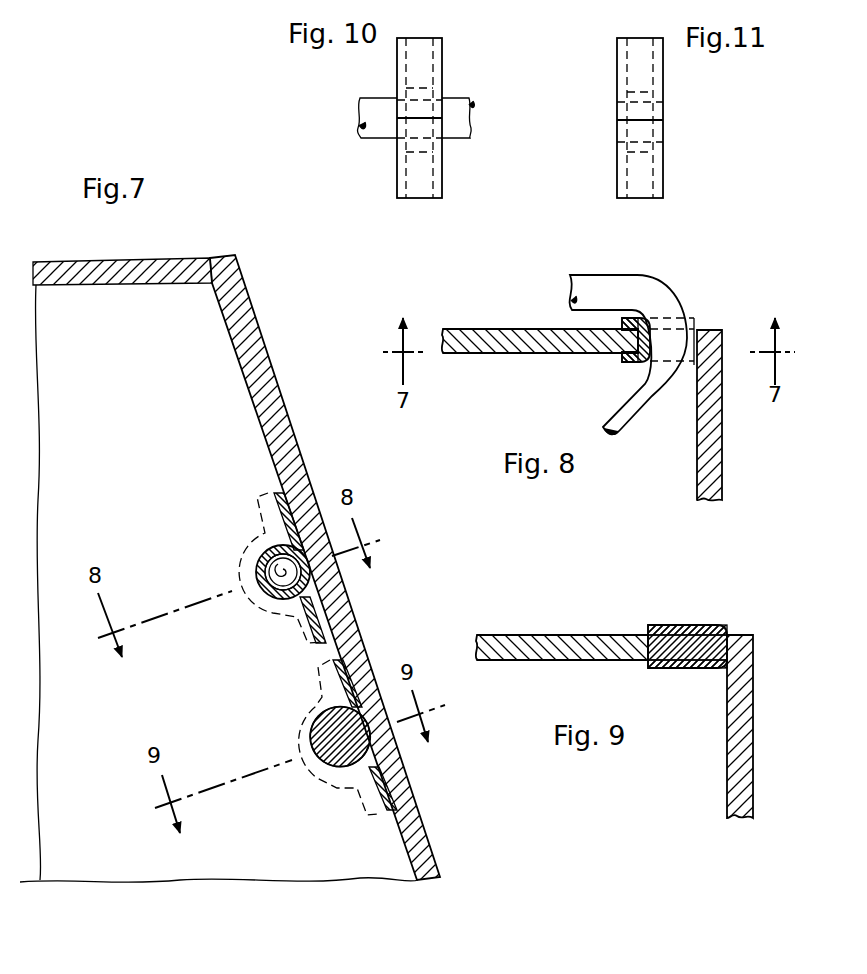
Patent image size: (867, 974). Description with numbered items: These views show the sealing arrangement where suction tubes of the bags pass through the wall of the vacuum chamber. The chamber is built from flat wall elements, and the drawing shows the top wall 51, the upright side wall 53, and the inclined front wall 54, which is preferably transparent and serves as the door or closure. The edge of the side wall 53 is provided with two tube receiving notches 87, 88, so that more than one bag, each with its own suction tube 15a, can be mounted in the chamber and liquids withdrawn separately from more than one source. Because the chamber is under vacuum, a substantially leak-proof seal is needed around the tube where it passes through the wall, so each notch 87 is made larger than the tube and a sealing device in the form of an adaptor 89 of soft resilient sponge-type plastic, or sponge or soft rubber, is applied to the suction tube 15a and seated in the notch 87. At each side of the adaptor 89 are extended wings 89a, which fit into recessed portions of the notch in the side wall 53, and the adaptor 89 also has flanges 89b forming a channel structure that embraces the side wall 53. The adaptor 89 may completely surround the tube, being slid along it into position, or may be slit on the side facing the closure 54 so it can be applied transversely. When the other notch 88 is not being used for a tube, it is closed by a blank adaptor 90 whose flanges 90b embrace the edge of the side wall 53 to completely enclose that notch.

In FIG. 7, the suction tube 15a is at (262, 560).
In FIG. 8, the suction tube 15a is at (614, 286).
In FIG. 10, the suction tube 15a is at (377, 133).
In FIG. 7, the top wall 51 is at (95, 262).
In FIG. 7, the side wall 53 is at (337, 823).
In FIG. 8, the side wall 53 is at (492, 328).
In FIG. 9, the side wall 53 is at (557, 635).
In FIG. 7, the inclined front wall 54 is at (278, 397).
In FIG. 8, the inclined front wall 54 is at (723, 427).
In FIG. 9, the inclined front wall 54 is at (753, 725).
In FIG. 7, the tube receiving notch 87 is at (268, 600).
In FIG. 7, the tube receiving notch 88 is at (320, 765).
In FIG. 7, the adaptor 89 is at (258, 592).
In FIG. 8, the adaptor 89 is at (632, 343).
In FIG. 10, the adaptor 89 is at (393, 150).
In FIG. 11, the adaptor 89 is at (612, 92).
In FIG. 7, the wings 89a is at (277, 493).
In FIG. 10, the wings 89a is at (420, 40).
In FIG. 11, the wings 89a is at (640, 42).
In FIG. 7, the flanges 89b is at (273, 617).
In FIG. 8, the flanges 89b is at (622, 322).
In FIG. 10, the flanges 89b is at (437, 78).
In FIG. 11, the flanges 89b is at (623, 155).
In FIG. 7, the blank adaptor 90 is at (352, 748).
In FIG. 9, the blank adaptor 90 is at (700, 625).
In FIG. 7, the flanges 90b is at (315, 793).
In FIG. 9, the flanges 90b is at (642, 626).